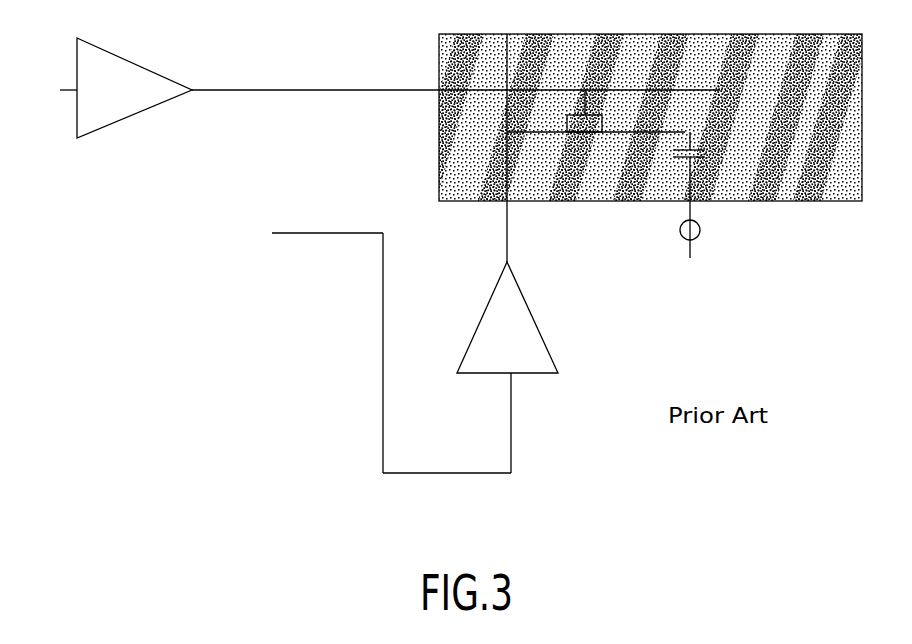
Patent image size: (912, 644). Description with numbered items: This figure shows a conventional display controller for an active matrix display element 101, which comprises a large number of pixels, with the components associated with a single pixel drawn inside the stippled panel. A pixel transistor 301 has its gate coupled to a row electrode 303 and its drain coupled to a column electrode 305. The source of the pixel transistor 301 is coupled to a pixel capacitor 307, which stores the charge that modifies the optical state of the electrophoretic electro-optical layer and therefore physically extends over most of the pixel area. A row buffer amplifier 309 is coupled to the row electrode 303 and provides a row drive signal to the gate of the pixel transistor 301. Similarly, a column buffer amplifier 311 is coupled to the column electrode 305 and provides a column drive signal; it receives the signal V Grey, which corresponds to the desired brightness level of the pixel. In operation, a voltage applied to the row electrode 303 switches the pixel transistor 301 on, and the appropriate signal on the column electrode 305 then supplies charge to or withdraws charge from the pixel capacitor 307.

The active matrix display element 101 is at (440, 148).
The pixel transistor 301 is at (585, 118).
The row electrode 303 is at (295, 83).
The column electrode 305 is at (507, 235).
The pixel capacitor 307 is at (703, 160).
The row buffer amplifier 309 is at (127, 117).
The column buffer amplifier 311 is at (533, 315).